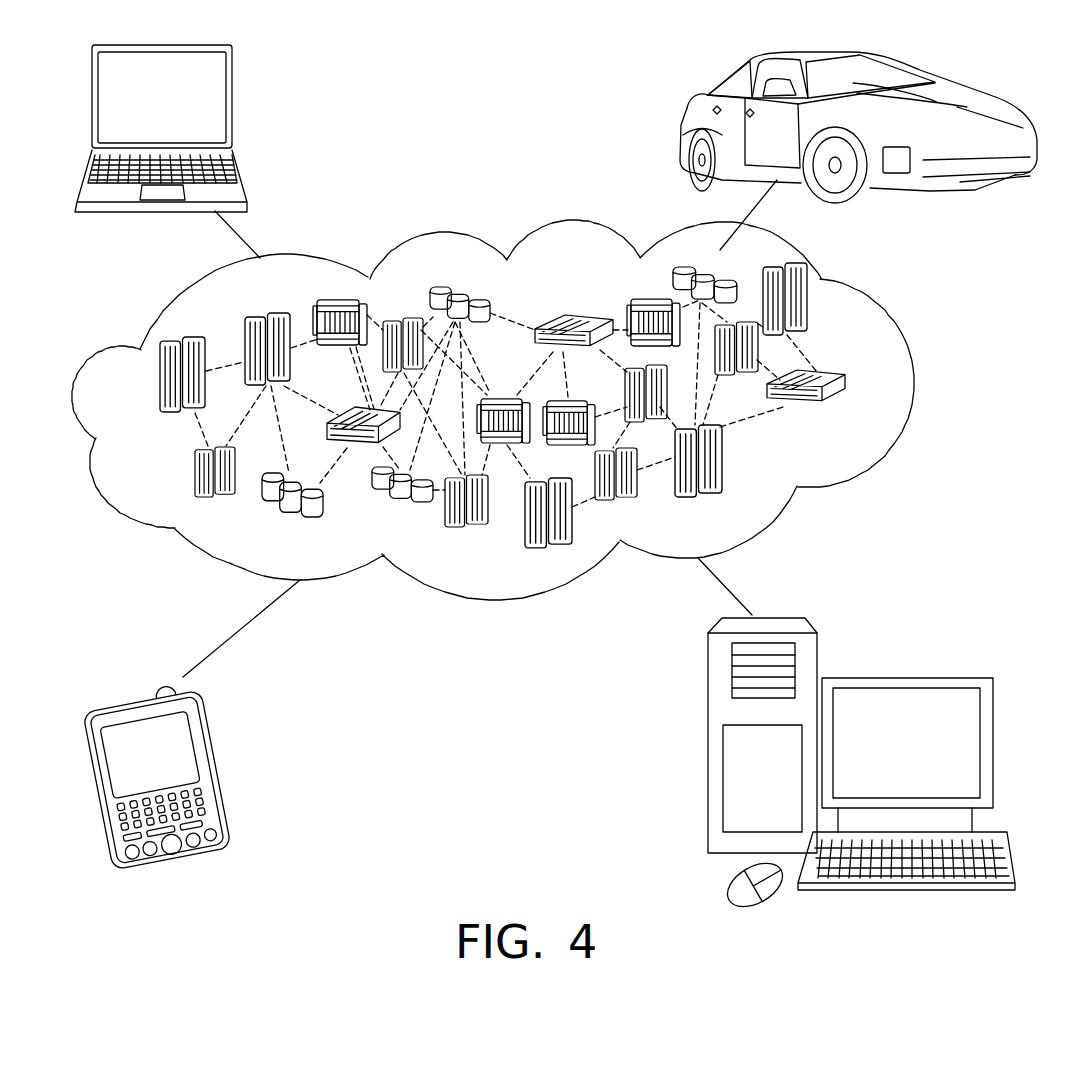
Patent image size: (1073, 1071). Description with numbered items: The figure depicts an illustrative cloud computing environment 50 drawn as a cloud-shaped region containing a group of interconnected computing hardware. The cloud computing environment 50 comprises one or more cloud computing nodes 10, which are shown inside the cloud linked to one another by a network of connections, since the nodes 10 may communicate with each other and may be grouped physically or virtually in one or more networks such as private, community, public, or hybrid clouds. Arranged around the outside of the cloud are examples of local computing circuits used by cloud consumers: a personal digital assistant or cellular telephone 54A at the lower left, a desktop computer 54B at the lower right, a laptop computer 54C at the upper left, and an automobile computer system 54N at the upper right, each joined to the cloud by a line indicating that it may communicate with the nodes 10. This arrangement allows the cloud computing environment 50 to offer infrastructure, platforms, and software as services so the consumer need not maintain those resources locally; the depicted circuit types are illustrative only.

The cloud computing node 10 is at (847, 417).
The cloud computing environment 50 is at (520, 410).
The personal digital assistant or cellular telephone 54A is at (217, 770).
The desktop computer 54B is at (902, 678).
The laptop computer 54C is at (233, 108).
The automobile computer system 54N is at (682, 128).